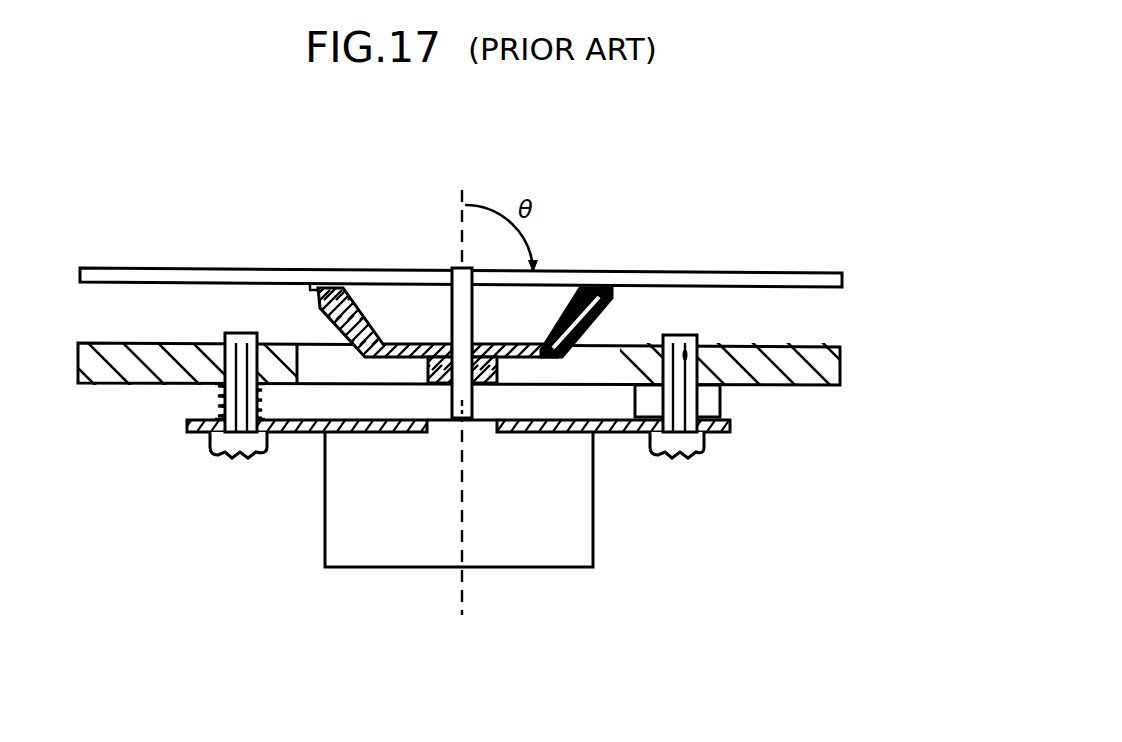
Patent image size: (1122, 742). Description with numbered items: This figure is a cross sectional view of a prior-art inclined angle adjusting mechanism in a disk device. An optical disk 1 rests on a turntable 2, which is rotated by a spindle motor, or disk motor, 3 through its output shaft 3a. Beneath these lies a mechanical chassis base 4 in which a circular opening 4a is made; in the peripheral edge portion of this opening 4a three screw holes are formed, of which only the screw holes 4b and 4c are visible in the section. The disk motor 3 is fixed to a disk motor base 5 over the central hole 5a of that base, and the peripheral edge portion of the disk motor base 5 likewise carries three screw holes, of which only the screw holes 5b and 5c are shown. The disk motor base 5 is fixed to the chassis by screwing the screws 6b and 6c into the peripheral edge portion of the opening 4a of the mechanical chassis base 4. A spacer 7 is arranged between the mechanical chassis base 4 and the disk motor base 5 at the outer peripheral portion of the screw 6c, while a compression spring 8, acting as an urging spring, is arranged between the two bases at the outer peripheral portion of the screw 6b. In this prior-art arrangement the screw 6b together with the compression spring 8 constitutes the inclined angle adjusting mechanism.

The optical disk 1 is at (742, 272).
The turntable 2 is at (337, 290).
The spindle motor 3 is at (548, 552).
The output shaft 3a is at (447, 315).
The mechanical chassis base 4 is at (838, 357).
The circular opening 4a is at (614, 364).
The screw hole 4b is at (240, 336).
The screw hole 4c is at (690, 340).
The disk motor base 5 is at (732, 427).
The central hole 5a is at (425, 427).
The screw hole 5b is at (257, 457).
The screw hole 5c is at (658, 455).
The screw 6b is at (223, 458).
The screw 6c is at (690, 455).
The spacer 7 is at (725, 398).
The compression spring 8 is at (217, 385).